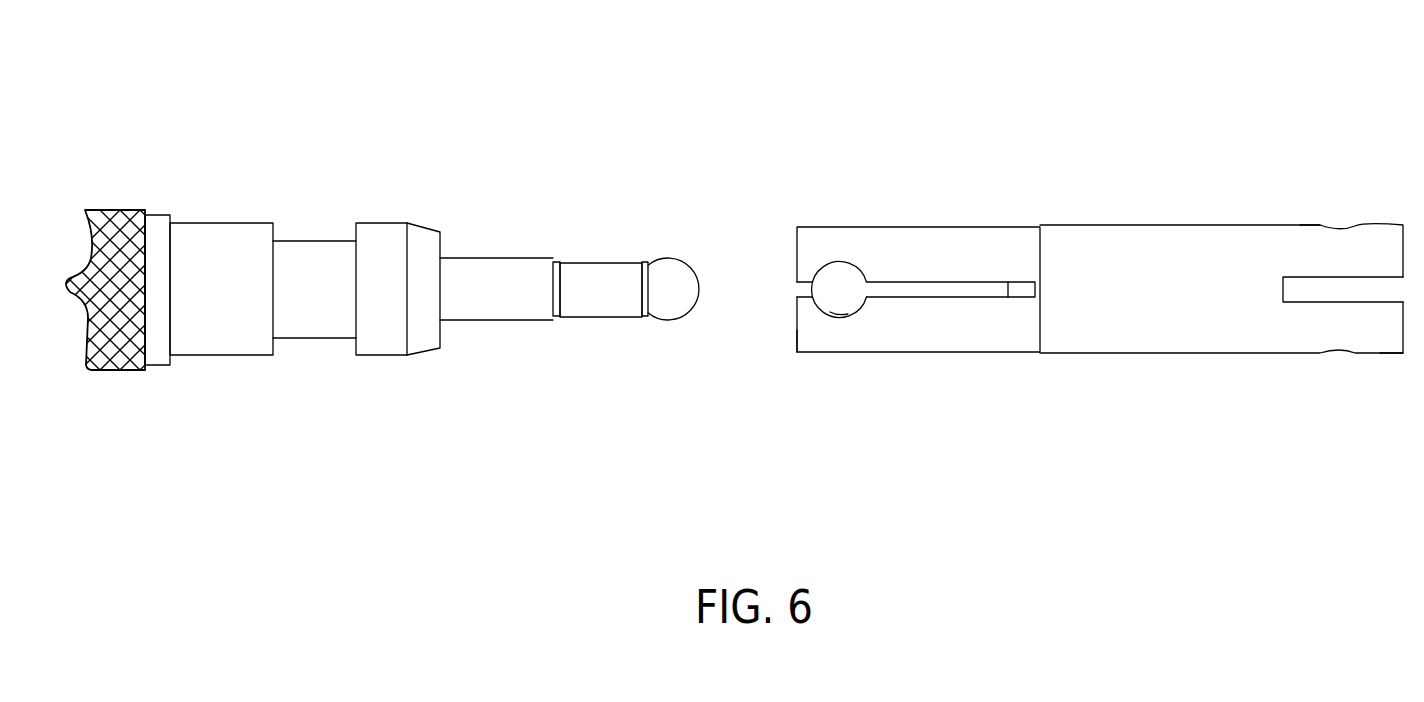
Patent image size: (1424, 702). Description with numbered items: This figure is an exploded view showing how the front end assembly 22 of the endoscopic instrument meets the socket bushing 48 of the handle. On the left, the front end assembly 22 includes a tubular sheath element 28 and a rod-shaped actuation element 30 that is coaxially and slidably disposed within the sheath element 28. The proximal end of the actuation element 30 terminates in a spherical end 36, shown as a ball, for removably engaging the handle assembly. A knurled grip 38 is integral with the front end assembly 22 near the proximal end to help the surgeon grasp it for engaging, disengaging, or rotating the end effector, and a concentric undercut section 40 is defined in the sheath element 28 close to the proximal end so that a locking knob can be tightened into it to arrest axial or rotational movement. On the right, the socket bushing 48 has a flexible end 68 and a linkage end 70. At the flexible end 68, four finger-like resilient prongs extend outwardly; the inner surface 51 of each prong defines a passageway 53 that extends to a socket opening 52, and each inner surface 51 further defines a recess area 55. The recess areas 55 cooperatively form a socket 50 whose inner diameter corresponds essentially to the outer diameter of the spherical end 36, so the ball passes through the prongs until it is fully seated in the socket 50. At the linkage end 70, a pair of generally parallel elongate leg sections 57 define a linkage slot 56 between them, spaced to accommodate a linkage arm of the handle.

The front end assembly 22 is at (382, 193).
The tubular sheath element 28 is at (240, 355).
The rod-shaped actuation element 30 is at (590, 320).
The spherical end 36 is at (680, 322).
The knurled grip 38 is at (108, 372).
The concentric undercut section 40 is at (330, 340).
The socket bushing 48 is at (1014, 183).
The socket 50 is at (842, 280).
The inner surface 51 is at (972, 291).
The socket opening 52 is at (797, 289).
The passageway 53 is at (947, 288).
The recess area 55 is at (840, 307).
The linkage slot 56 is at (1325, 290).
The leg section 57 is at (1313, 222).
The flexible end 68 is at (797, 352).
The linkage end 70 is at (1400, 355).